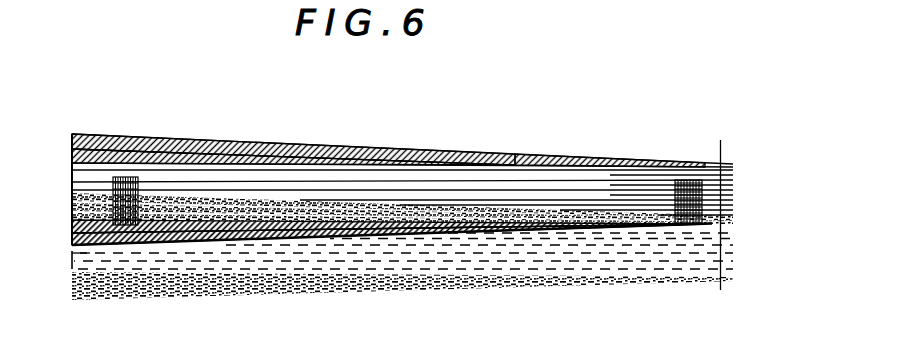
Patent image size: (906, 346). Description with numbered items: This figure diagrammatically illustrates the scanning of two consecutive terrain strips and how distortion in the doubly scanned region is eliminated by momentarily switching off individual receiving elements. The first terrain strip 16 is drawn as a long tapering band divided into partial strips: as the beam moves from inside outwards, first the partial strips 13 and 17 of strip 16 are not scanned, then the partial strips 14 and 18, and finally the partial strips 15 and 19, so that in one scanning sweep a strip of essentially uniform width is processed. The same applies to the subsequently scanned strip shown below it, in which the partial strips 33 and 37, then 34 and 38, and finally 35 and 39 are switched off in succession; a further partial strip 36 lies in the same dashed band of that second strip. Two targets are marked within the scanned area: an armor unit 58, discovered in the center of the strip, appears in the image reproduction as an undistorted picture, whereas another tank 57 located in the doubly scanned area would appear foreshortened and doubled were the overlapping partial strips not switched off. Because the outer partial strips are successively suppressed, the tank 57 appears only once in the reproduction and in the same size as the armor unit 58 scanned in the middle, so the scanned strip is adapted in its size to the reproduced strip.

The partial strip 13 is at (547, 158).
The partial strip 14 is at (362, 160).
The partial strip 15 is at (220, 165).
The strip 16 is at (598, 193).
The partial strip 17 is at (70, 247).
The partial strip 18 is at (72, 236).
The partial strip 19 is at (72, 227).
The partial strip 33 is at (72, 195).
The partial strip 34 is at (72, 200).
The partial strip 35 is at (72, 217).
The dashed layer 36 is at (527, 260).
The partial strip 37 is at (590, 280).
The partial strip 38 is at (400, 282).
The partial strip 39 is at (265, 273).
The tank 57 is at (133, 177).
The armor unit 58 is at (690, 180).